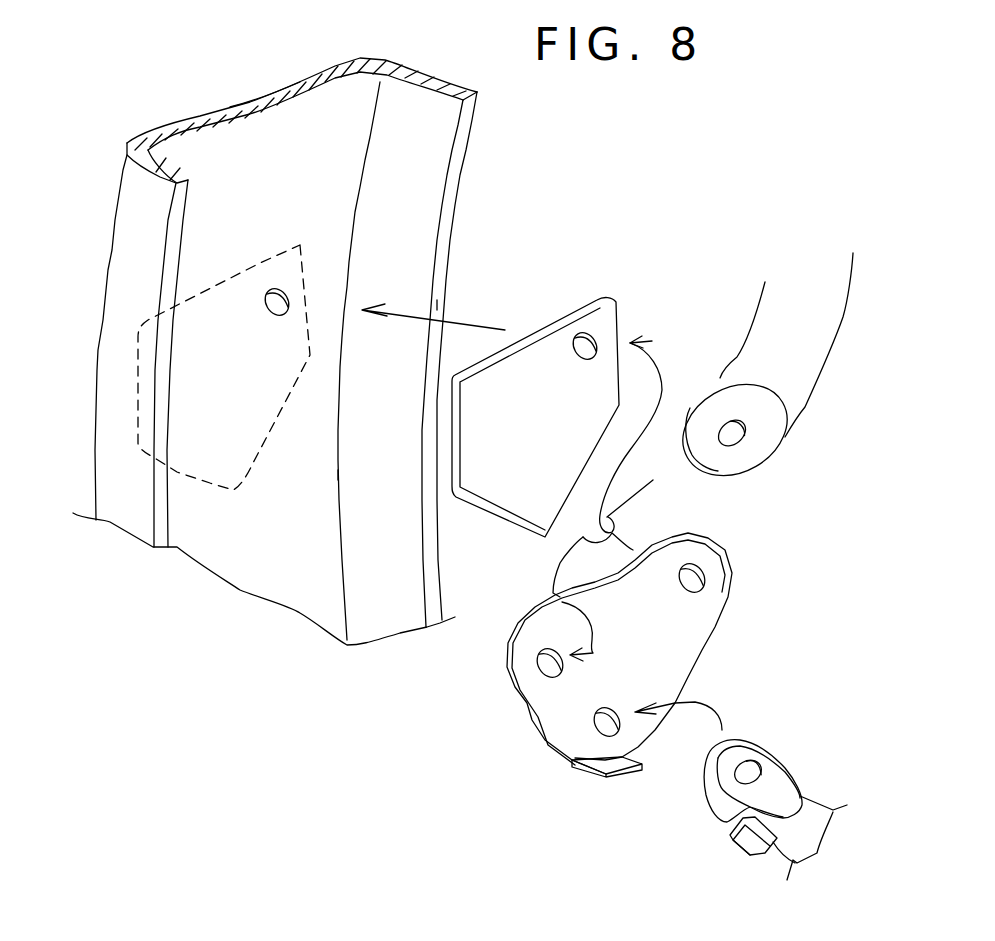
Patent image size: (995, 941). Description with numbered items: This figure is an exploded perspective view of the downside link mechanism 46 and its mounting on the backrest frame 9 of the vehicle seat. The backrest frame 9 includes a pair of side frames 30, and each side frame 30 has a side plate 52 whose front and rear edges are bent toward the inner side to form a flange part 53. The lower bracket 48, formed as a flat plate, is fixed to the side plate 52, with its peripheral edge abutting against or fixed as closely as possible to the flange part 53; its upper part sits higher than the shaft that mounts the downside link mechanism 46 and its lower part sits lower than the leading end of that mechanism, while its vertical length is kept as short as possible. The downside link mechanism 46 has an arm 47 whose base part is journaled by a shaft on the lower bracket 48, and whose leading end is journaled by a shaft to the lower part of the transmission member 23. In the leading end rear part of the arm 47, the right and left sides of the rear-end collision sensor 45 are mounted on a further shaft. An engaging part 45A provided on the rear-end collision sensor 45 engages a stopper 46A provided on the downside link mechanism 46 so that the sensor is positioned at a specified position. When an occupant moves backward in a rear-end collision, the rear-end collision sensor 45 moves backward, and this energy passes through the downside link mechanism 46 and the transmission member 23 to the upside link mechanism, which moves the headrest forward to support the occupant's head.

The side frame 30 is at (333, 351).
The backrest frame 9 is at (479, 165).
The side plate 52 is at (263, 125).
The flange part 53 is at (120, 345).
The lower bracket 48 is at (558, 313).
The transmission member 23 is at (748, 337).
The downside link mechanism 46 is at (556, 655).
The arm 47 is at (493, 690).
The stopper 46A is at (623, 777).
The rear-end collision sensor 45 is at (822, 783).
The engaging part 45A is at (750, 838).